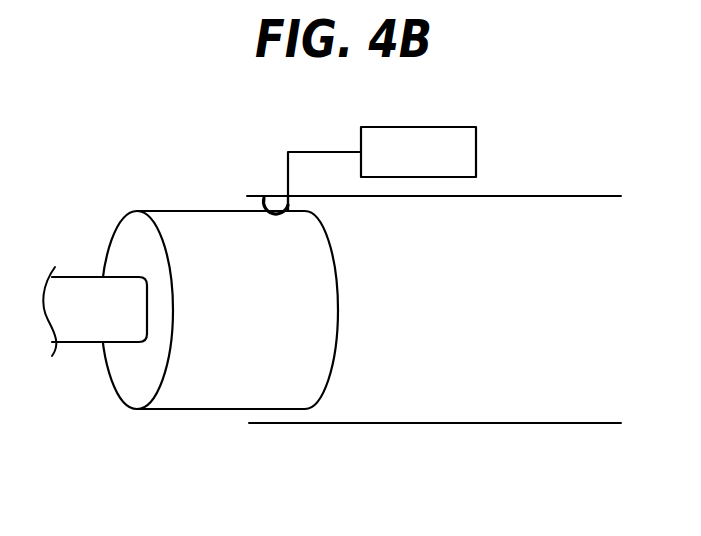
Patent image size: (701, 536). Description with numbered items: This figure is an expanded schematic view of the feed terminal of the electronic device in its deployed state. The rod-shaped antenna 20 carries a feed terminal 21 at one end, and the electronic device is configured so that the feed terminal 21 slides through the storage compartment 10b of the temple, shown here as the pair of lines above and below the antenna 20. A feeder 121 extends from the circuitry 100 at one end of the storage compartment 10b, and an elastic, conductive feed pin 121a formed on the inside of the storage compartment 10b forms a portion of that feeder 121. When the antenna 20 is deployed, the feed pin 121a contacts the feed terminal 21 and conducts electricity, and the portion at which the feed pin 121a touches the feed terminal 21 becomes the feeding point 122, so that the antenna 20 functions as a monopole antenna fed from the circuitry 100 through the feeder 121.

The storage compartment 10b is at (575, 197).
The antenna 20 is at (85, 332).
The feed terminal 21 is at (213, 392).
The circuitry 100 is at (476, 152).
The feeder 121 is at (323, 152).
The feed pin 121a is at (278, 200).
The feeding point 122 is at (275, 217).